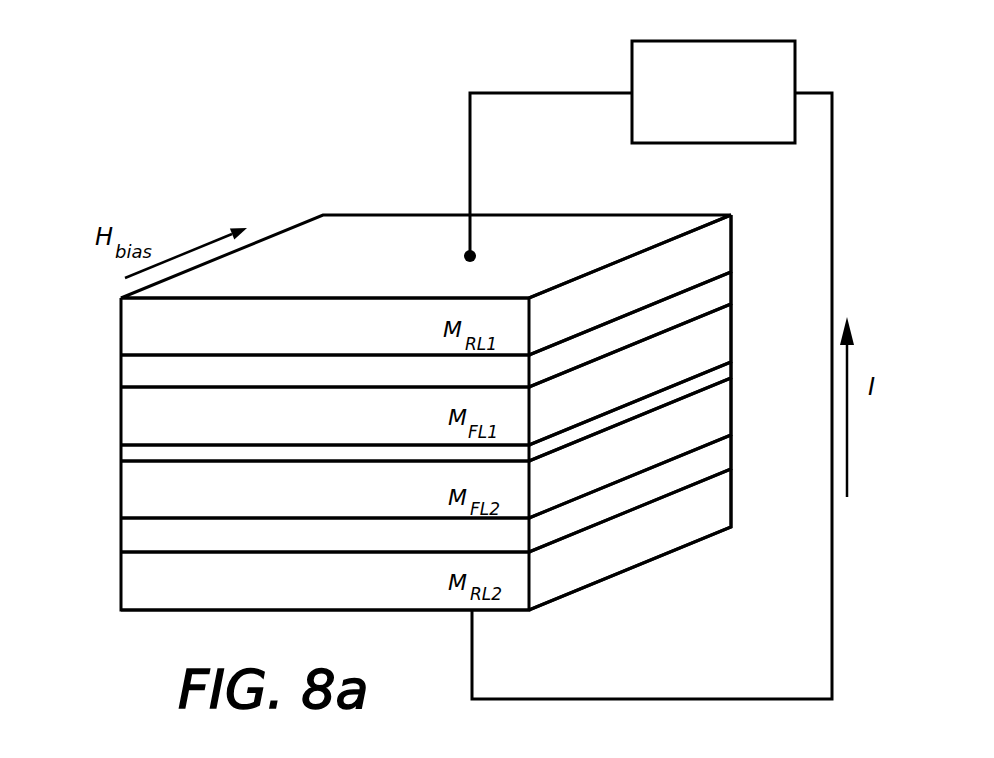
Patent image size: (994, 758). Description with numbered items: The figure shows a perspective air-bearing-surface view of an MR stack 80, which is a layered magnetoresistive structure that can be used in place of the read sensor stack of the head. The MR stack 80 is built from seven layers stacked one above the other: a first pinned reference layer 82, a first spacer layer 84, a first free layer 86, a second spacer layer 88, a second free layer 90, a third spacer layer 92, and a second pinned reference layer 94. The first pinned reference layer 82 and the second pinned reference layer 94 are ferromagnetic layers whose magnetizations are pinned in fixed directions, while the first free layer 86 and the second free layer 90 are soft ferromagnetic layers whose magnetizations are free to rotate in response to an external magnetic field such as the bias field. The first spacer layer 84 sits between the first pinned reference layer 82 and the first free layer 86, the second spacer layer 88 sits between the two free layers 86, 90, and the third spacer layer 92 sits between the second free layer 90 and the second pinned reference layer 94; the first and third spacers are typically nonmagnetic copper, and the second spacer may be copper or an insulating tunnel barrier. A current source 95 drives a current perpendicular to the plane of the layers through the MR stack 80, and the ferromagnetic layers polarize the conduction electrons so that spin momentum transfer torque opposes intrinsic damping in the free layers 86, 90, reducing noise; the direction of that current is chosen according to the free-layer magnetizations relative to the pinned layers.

The MR stack 80 is at (236, 163).
The first pinned reference layer 82 is at (715, 247).
The first spacer layer 84 is at (140, 373).
The first free layer 86 is at (718, 337).
The second spacer layer 88 is at (132, 455).
The second free layer 90 is at (703, 412).
The third spacer layer 92 is at (137, 534).
The second pinned reference layer 94 is at (713, 508).
The current source 95 is at (632, 60).